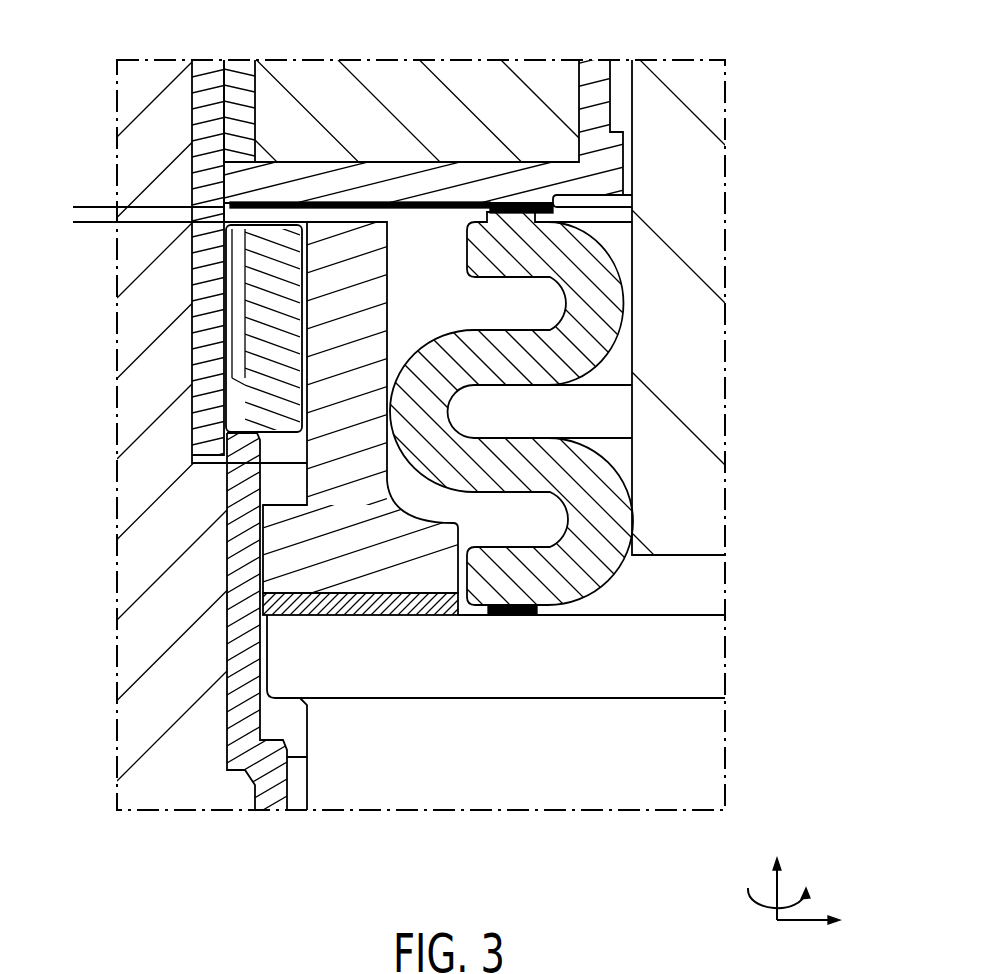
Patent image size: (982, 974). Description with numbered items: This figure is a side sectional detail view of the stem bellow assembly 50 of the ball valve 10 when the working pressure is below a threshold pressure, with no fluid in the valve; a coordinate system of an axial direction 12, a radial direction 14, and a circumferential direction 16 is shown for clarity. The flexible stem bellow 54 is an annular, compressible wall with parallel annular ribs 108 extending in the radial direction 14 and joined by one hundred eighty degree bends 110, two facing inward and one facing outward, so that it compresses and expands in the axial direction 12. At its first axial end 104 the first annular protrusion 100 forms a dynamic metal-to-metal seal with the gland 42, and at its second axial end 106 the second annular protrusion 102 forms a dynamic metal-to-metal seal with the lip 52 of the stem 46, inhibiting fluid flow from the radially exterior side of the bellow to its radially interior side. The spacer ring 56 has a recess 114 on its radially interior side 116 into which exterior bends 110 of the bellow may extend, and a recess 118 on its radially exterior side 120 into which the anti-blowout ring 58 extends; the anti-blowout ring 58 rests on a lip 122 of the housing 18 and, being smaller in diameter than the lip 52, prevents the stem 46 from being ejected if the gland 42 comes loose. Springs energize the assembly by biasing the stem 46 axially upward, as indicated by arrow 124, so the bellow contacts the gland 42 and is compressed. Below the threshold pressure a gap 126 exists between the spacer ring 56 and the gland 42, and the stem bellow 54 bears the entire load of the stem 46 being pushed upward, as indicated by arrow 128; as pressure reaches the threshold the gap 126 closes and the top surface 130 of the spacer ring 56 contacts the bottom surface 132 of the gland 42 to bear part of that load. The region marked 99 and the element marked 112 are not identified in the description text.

The ball valve 10 is at (115, 42).
The axial direction 12 is at (780, 888).
The radial direction 14 is at (803, 922).
The circumferential direction 16 is at (755, 905).
The housing 18 is at (133, 405).
The gland 42 is at (500, 83).
The stem 46 is at (708, 90).
The stem bellow assembly 50 is at (760, 163).
The lip 52 is at (580, 615).
The flexible stem bellow 54 is at (612, 462).
The spacer ring 56 is at (355, 298).
The anti-blowout ring 58 is at (245, 397).
The cavity 99 is at (590, 428).
The first annular protrusion 100 is at (598, 258).
The second annular protrusion 102 is at (513, 615).
The first axial end 104 is at (628, 242).
The second axial end 106 is at (675, 600).
The parallel annular ribs 108 is at (515, 340).
The bends 110 is at (407, 357).
The abradable layer 112 is at (363, 615).
The recess 114 is at (500, 525).
The radially interior side 116 is at (387, 243).
The recess 118 is at (300, 495).
The radially exterior side 120 is at (262, 458).
The lip 122 is at (250, 435).
The arrow 124 is at (412, 0).
The gap 126 is at (88, 230).
The arrow 128 is at (440, 735).
The top surface 130 is at (362, 221).
The bottom surface 132 is at (275, 210).